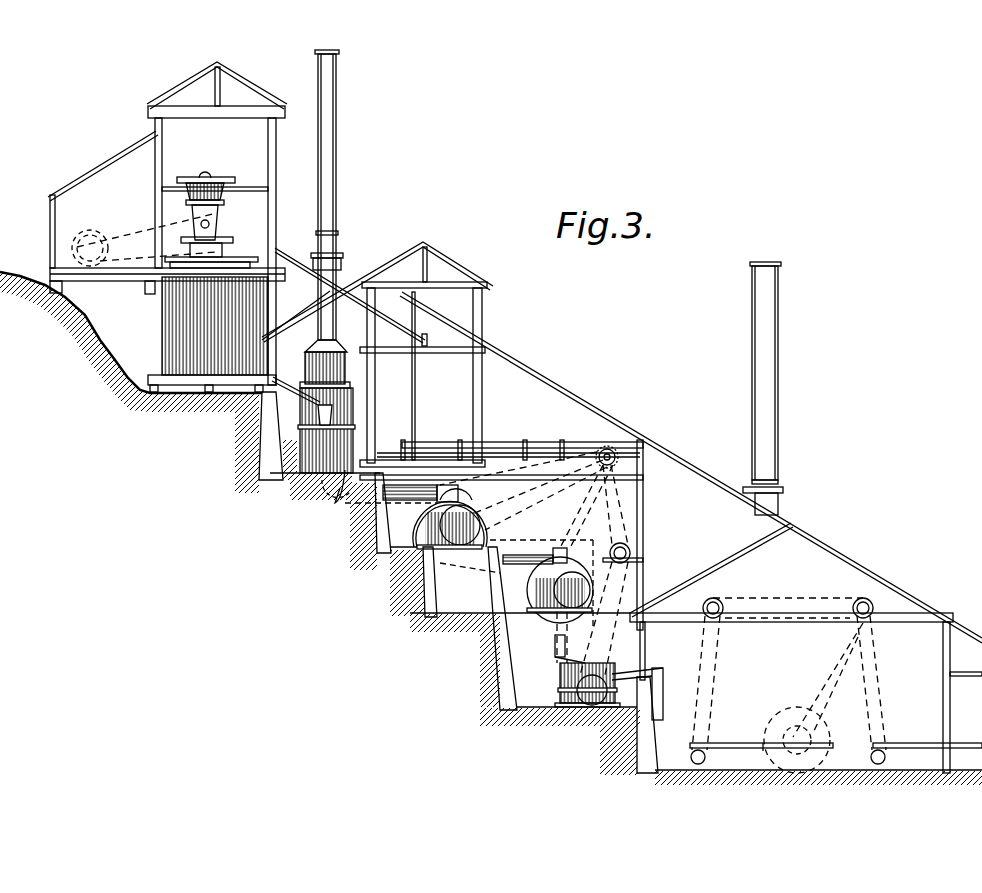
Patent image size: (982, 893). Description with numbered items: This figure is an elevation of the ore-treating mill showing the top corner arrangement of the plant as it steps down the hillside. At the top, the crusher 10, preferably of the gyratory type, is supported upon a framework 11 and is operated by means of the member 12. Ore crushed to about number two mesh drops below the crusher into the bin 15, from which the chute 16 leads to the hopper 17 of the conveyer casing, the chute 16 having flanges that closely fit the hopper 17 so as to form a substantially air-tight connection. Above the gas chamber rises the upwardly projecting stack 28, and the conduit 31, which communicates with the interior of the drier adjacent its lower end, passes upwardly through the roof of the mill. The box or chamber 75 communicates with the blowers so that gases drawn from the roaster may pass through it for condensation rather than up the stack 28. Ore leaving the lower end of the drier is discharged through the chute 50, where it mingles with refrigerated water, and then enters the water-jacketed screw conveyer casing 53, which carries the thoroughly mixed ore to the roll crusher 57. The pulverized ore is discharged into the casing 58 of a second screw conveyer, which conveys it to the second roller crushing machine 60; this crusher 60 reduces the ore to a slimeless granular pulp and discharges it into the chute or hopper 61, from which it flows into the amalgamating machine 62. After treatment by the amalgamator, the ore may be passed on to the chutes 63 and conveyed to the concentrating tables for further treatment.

The crusher 10 is at (213, 183).
The framework 11 is at (233, 237).
The operating member 12 is at (75, 240).
The bin 15 is at (185, 357).
The chute 16 is at (290, 392).
The hopper 17 is at (320, 420).
The stack 28 is at (334, 186).
The conduit 31 is at (336, 242).
The box or chamber 75 is at (340, 380).
The discharge chute 50 is at (340, 488).
The screw conveyer casing 53 is at (357, 528).
The roll crusher 57 is at (413, 553).
The casing 58 is at (517, 555).
The second roller crushing machine 60 is at (533, 602).
The chute or hopper 61 is at (555, 643).
The amalgamating machine 62 is at (565, 680).
The chutes 63 is at (652, 678).